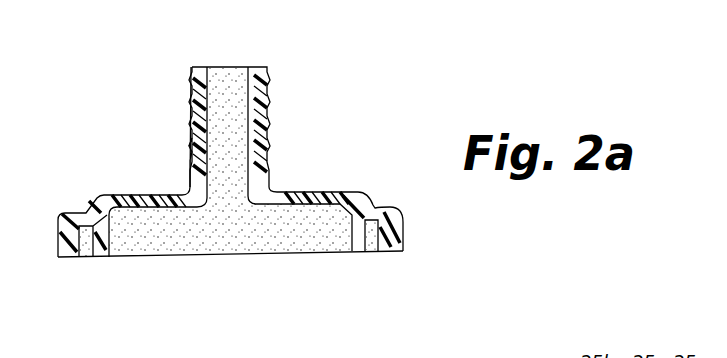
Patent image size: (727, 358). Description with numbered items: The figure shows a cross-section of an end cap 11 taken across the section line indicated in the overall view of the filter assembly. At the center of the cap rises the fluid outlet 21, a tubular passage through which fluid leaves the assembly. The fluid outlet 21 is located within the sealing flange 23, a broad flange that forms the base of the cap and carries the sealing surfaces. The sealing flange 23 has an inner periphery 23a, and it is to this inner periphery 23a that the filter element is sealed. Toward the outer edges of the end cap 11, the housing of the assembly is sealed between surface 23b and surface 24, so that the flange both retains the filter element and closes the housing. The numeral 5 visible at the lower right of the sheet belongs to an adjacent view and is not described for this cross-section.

The closure / cap body 11 is at (320, 169).
The fluid outlet 21 is at (234, 66).
The sealing flange 23 is at (361, 247).
The inner periphery 23a is at (353, 229).
The surface 23b is at (89, 232).
The surface 24 is at (88, 254).
The reference numeral 5 is at (516, 357).